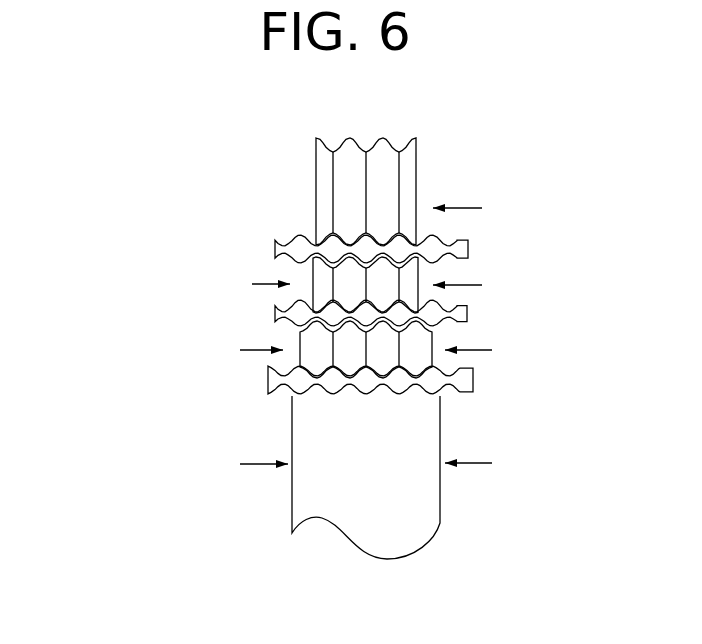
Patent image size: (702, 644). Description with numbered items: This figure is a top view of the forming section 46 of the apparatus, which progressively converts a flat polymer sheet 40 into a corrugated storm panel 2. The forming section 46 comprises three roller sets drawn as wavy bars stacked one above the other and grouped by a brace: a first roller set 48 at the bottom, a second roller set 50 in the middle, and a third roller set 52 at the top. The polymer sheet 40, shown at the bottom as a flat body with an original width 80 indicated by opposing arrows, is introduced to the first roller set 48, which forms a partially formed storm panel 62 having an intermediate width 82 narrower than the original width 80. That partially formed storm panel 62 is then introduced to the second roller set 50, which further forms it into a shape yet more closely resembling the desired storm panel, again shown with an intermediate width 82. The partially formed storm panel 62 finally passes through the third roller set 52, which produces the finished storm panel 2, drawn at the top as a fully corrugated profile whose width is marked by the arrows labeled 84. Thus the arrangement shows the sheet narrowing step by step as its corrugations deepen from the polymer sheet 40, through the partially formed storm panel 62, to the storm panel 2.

The storm panel 2 is at (387, 172).
The polymer sheet 40 is at (347, 472).
The forming section 46 is at (160, 235).
The first roller set 48 is at (268, 383).
The second roller set 50 is at (275, 318).
The third roller set 52 is at (275, 251).
The partially formed storm panel 62 is at (388, 282).
The original width 80 is at (485, 464).
The intermediate width 82 is at (479, 318).
The pressure on corrugated sheet 84 is at (474, 209).